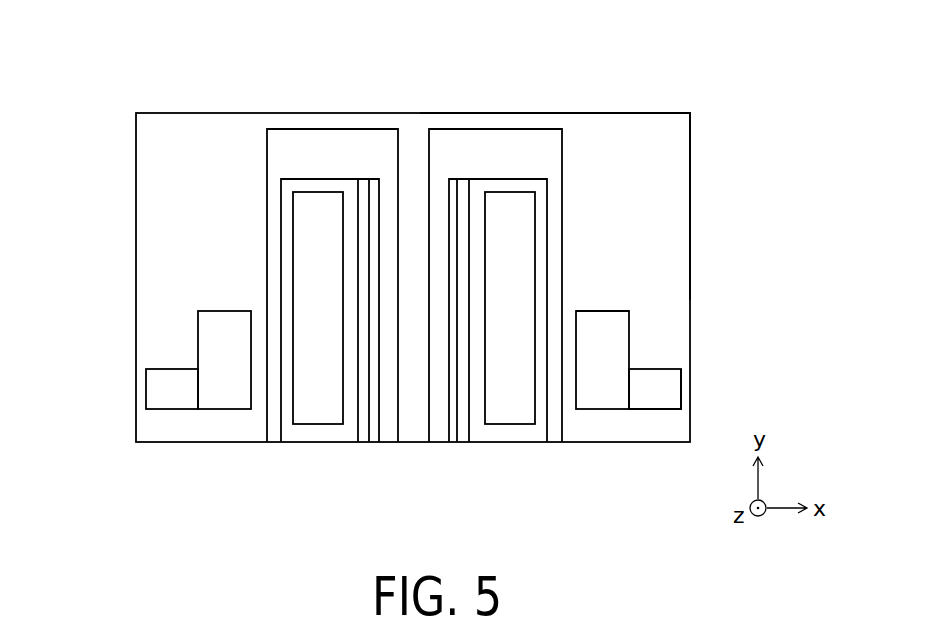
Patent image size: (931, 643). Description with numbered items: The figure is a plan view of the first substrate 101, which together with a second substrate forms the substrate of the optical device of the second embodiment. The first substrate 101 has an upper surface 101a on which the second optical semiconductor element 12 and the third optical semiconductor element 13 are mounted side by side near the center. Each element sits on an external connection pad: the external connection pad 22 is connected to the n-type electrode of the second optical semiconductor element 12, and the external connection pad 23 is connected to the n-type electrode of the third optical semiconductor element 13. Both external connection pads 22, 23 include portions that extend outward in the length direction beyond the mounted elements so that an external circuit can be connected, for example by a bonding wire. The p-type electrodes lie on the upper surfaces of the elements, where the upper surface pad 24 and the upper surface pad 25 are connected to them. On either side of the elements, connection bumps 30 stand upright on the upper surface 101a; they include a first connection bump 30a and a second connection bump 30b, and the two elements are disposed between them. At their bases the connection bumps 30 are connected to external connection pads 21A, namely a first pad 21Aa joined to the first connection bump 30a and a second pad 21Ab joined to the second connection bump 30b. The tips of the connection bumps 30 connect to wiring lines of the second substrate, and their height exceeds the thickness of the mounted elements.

The first substrate 101 is at (617, 147).
The upper surface 101a is at (660, 153).
The external connection pad 22 is at (333, 152).
The external connection pad 23 is at (483, 152).
The upper surface pad 24 is at (318, 244).
The upper surface pad 25 is at (512, 213).
The second optical semiconductor element 12 is at (319, 431).
The third optical semiconductor element 13 is at (511, 431).
The connection bumps 30 is at (607, 392).
The first connection bump 30a is at (606, 331).
The second connection bump 30b is at (220, 391).
The external connection pads 21A is at (652, 397).
The first pad 21Aa is at (663, 389).
The second pad 21Ab is at (172, 390).